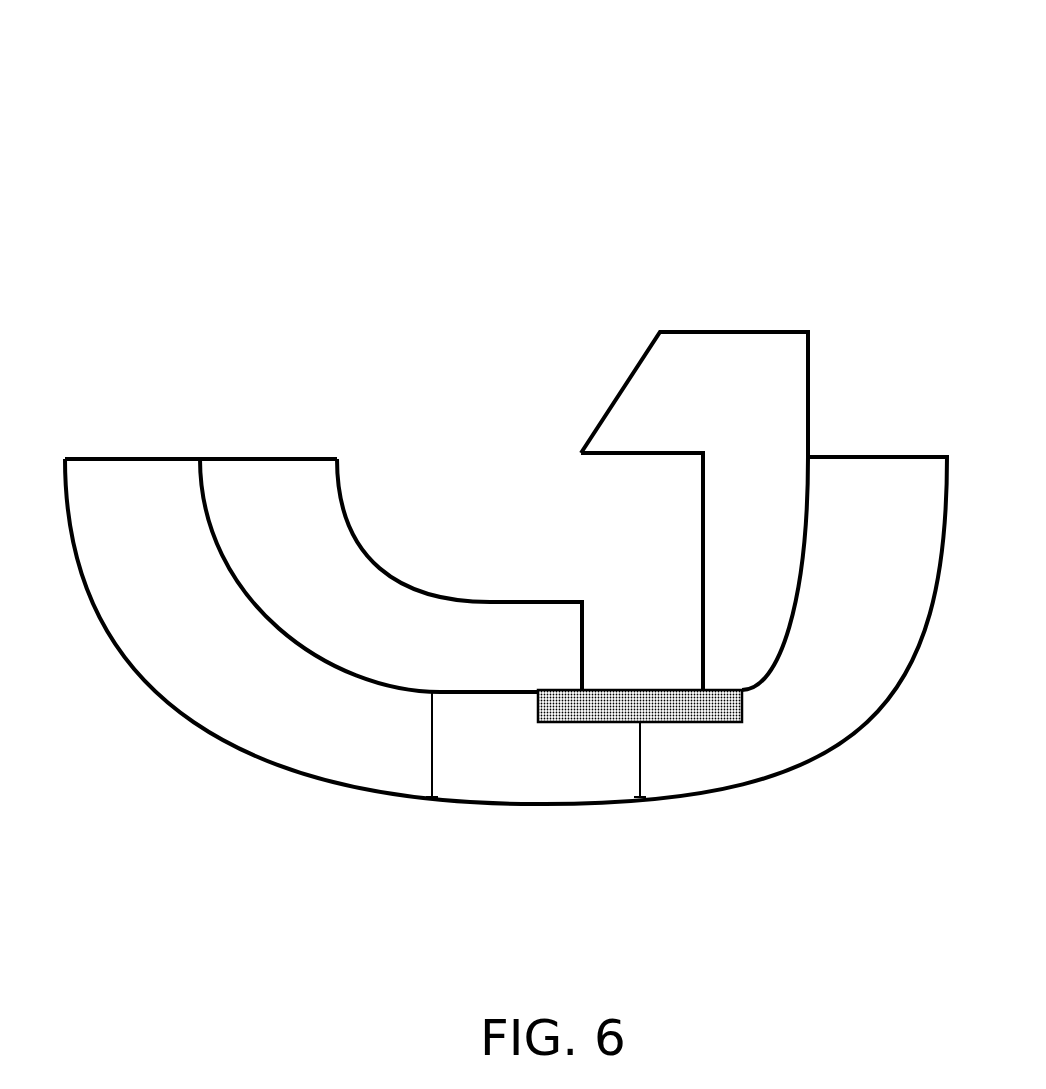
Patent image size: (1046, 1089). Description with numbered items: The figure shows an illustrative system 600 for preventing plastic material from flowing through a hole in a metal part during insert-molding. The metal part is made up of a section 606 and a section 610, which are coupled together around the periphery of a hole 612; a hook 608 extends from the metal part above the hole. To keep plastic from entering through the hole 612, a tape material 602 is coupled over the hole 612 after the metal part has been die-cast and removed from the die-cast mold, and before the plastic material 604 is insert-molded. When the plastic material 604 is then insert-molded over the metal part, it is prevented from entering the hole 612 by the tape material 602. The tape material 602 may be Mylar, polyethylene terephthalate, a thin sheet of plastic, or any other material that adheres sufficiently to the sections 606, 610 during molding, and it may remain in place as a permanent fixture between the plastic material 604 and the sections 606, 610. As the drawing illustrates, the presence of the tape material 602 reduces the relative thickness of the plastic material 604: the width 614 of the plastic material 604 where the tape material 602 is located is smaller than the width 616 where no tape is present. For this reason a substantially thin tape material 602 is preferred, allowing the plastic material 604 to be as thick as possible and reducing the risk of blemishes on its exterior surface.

The system 600 is at (580, 54).
The tape material 602 is at (742, 722).
The plastic material 604 is at (110, 497).
The section 606 is at (765, 547).
The hook 608 is at (675, 388).
The section 610 is at (280, 507).
The hole 612 is at (648, 628).
The width 614 is at (640, 762).
The width 616 is at (432, 744).